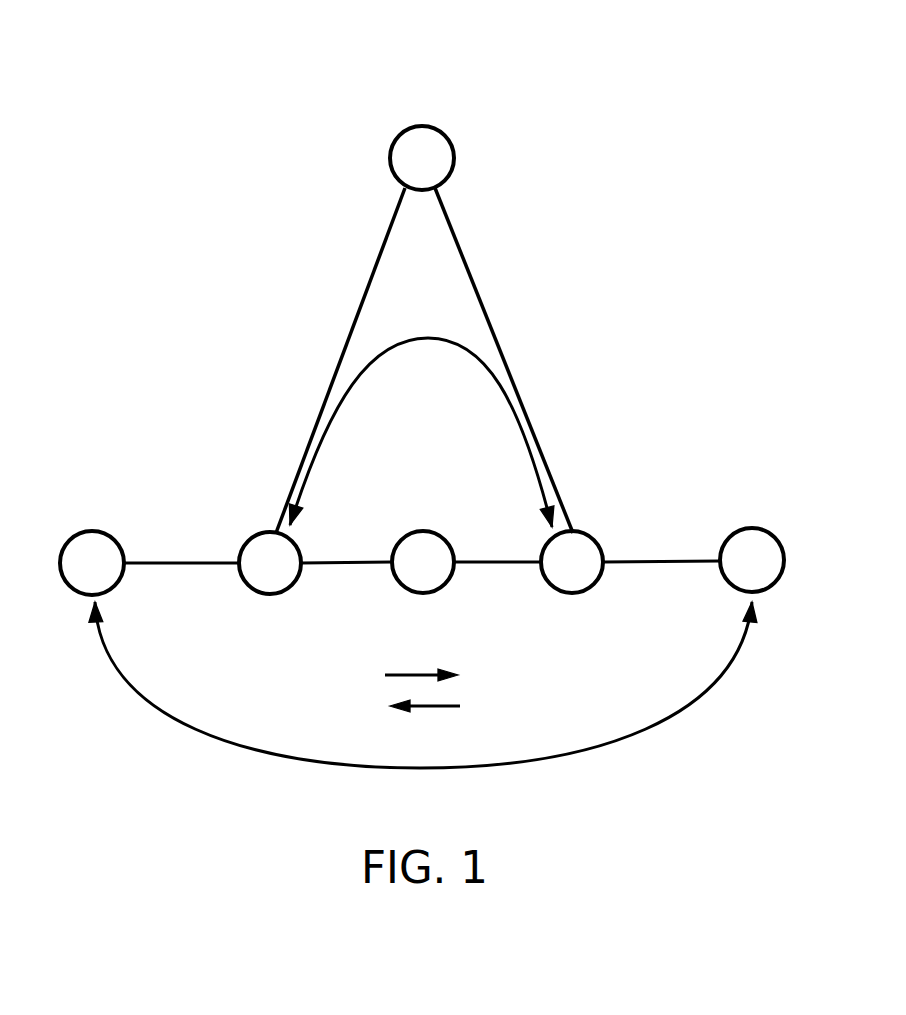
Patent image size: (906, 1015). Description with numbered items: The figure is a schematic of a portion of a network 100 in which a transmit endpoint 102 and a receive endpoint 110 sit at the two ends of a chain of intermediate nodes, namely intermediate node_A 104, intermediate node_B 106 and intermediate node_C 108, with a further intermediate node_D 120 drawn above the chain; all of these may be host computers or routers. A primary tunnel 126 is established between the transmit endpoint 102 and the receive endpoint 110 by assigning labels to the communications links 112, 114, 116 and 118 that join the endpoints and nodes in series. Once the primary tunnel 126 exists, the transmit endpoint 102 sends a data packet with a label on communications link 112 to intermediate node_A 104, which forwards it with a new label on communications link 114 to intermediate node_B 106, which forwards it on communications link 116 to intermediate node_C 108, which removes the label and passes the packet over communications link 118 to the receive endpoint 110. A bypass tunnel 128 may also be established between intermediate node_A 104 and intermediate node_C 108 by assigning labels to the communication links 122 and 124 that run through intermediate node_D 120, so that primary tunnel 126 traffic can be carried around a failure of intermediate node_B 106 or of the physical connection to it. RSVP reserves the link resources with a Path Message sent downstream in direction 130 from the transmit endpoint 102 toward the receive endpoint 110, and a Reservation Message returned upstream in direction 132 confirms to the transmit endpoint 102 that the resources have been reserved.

The network 100 is at (511, 55).
The transmit endpoint 102 is at (99, 531).
The intermediate node_A 104 is at (261, 532).
The intermediate node_B 106 is at (425, 531).
The intermediate node_C 108 is at (580, 531).
The receive endpoint 110 is at (754, 528).
The communications link 112 is at (186, 567).
The communications link 114 is at (356, 567).
The communications link 116 is at (501, 567).
The communications link 118 is at (664, 567).
The intermediate node_D 120 is at (443, 132).
The communications link 122 is at (364, 296).
The communications link 124 is at (481, 296).
The primary tunnel 126 is at (197, 718).
The bypass tunnel 128 is at (470, 362).
The downstream direction 130 is at (421, 663).
The upstream direction 132 is at (425, 719).